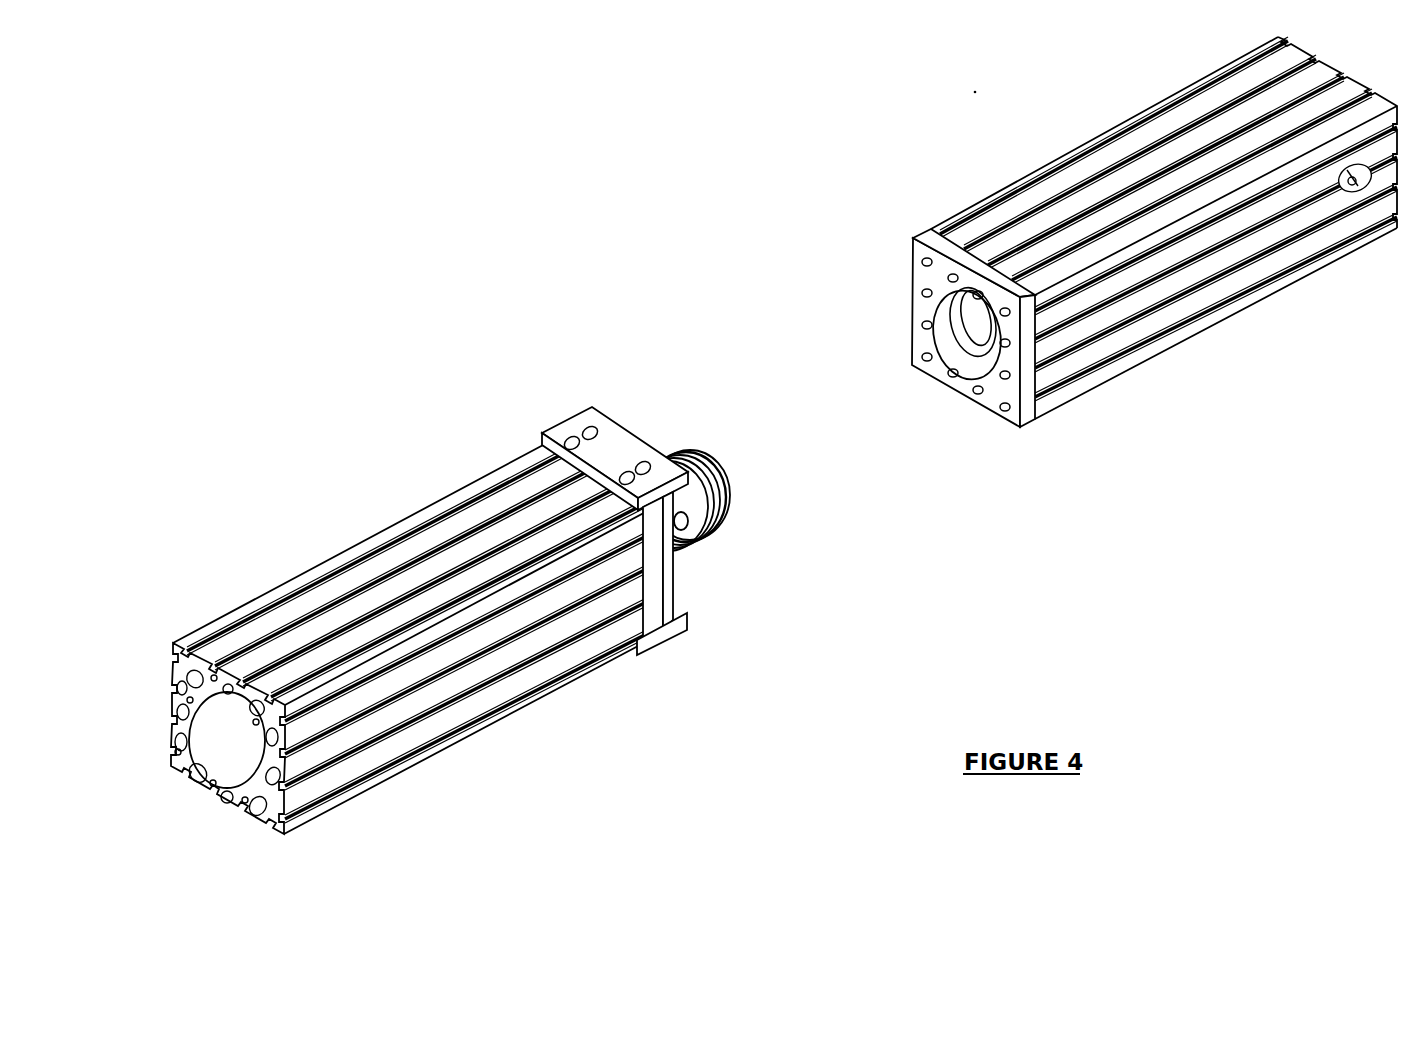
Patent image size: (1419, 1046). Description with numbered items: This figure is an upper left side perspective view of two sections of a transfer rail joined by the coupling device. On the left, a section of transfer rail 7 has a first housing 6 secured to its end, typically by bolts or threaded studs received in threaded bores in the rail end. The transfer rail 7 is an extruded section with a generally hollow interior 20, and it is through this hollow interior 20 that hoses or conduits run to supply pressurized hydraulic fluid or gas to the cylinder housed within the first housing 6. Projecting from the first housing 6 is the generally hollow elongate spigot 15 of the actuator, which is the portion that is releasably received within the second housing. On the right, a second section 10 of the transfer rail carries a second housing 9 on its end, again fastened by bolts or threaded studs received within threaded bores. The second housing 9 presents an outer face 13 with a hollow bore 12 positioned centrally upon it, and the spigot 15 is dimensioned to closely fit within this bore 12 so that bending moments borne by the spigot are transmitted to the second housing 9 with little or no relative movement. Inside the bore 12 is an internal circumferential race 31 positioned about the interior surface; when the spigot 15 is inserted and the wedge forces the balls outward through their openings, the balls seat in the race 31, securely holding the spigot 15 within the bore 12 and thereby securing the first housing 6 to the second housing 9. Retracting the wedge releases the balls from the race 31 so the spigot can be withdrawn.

The transfer rail 7 is at (527, 482).
The hollow interior 20 is at (243, 750).
The first housing 6 is at (539, 582).
The spigot 15 is at (692, 507).
The second section of transfer rail 10 is at (1083, 351).
The second housing 9 is at (912, 238).
The outer face 13 is at (990, 400).
The hollow bore 12 is at (962, 360).
The internal circumferential race 31 is at (970, 328).